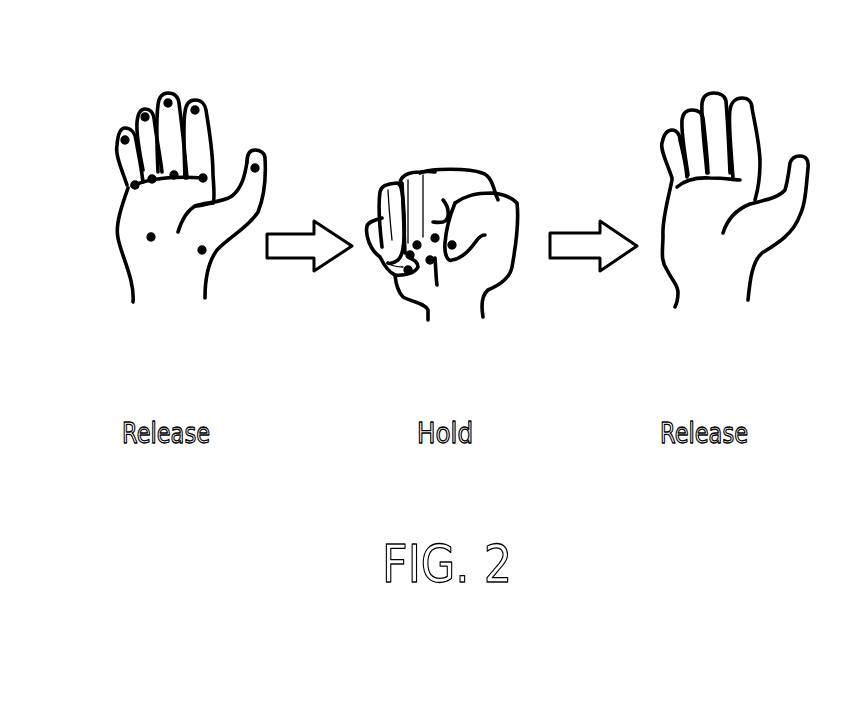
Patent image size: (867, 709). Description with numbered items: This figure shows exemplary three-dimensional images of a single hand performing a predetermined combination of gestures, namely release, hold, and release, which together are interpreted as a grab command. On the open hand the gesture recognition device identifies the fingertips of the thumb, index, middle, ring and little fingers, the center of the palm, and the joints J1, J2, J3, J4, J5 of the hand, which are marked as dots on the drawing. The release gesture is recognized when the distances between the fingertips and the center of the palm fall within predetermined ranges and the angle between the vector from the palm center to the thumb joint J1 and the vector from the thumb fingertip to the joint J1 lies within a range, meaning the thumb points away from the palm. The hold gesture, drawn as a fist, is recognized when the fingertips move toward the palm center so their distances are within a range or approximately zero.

The joint of the hand J1 is at (202, 250).
The joint of the hand J2 is at (203, 178).
The joint of the hand J3 is at (174, 175).
The joint of the hand J4 is at (152, 179).
The joint of the hand J5 is at (135, 185).